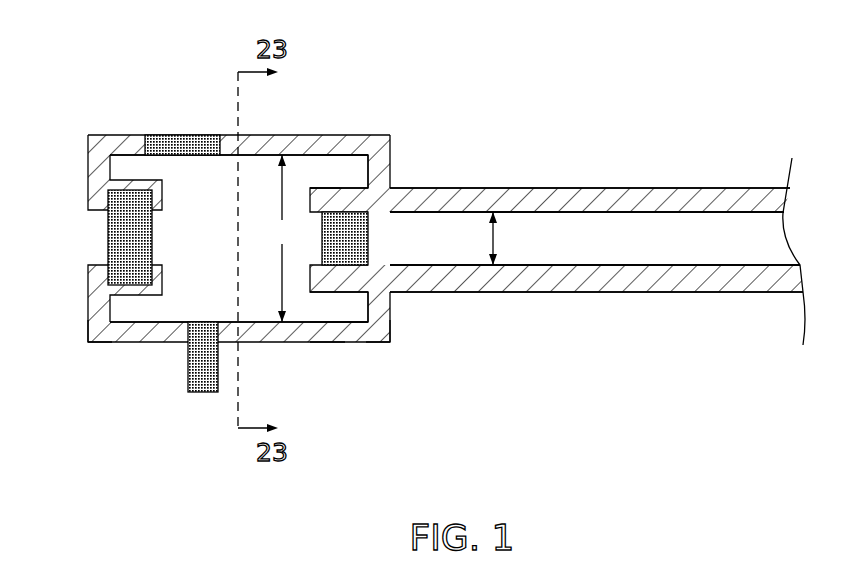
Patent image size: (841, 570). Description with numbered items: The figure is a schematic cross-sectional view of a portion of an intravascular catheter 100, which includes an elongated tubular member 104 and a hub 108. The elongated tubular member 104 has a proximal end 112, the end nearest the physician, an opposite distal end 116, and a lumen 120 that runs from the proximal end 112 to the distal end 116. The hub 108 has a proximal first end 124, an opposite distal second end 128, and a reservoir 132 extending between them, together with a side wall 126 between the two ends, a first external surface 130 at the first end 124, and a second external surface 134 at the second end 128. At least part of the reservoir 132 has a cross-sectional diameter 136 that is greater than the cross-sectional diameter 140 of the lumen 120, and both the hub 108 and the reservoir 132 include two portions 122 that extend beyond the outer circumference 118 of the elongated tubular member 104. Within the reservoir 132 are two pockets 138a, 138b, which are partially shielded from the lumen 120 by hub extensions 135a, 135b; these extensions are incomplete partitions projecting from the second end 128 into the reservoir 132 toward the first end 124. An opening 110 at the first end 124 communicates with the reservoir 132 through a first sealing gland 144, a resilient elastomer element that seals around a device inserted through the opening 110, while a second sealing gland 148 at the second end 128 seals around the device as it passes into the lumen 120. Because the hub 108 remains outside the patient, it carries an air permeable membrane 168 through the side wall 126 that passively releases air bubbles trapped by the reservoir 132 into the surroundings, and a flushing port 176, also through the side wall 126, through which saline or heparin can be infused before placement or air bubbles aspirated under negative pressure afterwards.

The intravascular catheter 100 is at (538, 116).
The elongated tubular member 104 is at (590, 187).
The hub 108 is at (366, 135).
The opening 110 is at (97, 229).
The proximal end 112 is at (390, 294).
The distal end 116 is at (750, 307).
The outer circumference 118 is at (722, 188).
The lumen 120 is at (595, 238).
The portions 122 is at (132, 163).
The first end 124 is at (88, 343).
The side wall 126 is at (262, 135).
The second end 128 is at (388, 342).
The first external surface 130 is at (88, 170).
The reservoir 132 is at (239, 238).
The second external surface 134 is at (390, 170).
The hub extension 135a is at (330, 343).
The hub extension 135b is at (311, 187).
The cross-sectional diameter 136 is at (282, 238).
The pocket 138a is at (335, 307).
The pocket 138b is at (335, 170).
The cross-sectional diameter 140 is at (514, 238).
The first sealing gland 144 is at (107, 242).
The second sealing gland 148 is at (370, 238).
The air permeable membrane 168 is at (183, 135).
The flushing port 176 is at (188, 383).